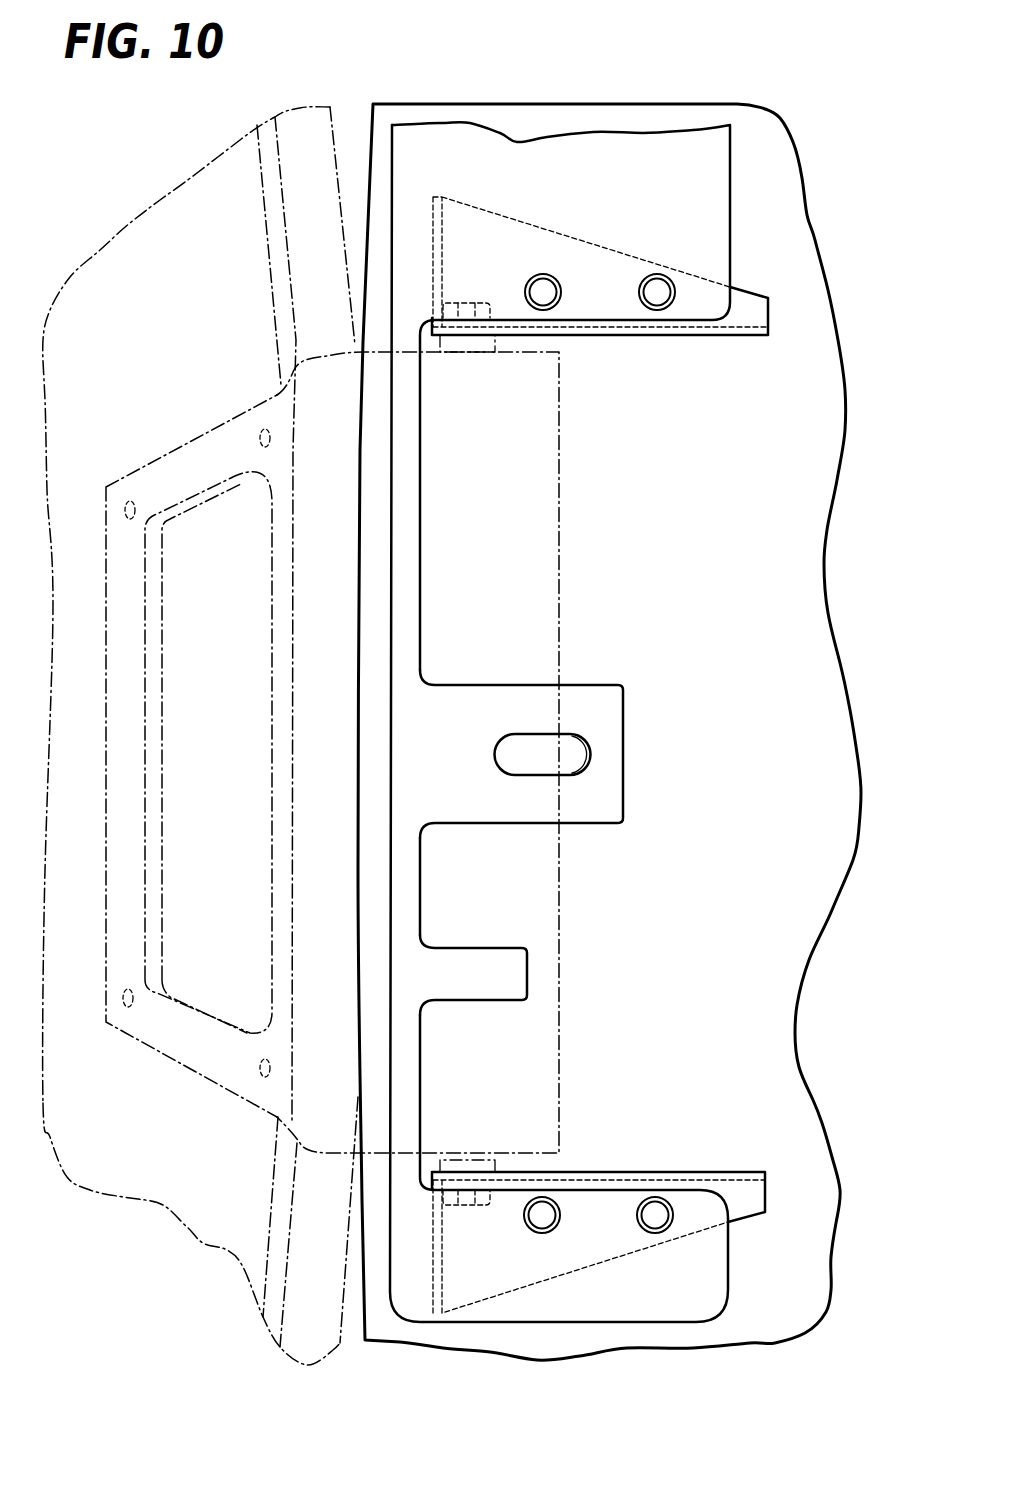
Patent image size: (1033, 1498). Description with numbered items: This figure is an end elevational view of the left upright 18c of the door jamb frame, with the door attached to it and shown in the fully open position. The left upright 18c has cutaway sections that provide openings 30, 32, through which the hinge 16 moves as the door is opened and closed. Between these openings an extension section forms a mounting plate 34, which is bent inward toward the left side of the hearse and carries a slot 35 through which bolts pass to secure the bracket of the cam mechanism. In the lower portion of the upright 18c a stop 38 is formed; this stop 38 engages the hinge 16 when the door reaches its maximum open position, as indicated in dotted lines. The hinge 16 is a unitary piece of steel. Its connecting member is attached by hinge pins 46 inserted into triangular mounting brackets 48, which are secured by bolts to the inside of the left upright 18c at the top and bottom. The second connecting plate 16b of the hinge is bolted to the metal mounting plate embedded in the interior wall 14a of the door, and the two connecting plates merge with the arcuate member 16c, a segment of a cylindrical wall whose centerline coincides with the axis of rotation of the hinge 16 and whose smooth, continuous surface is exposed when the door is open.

The interior wall 14a is at (140, 238).
The hinge 16 is at (338, 333).
The connecting plate 16b is at (223, 1213).
The arcuate member 16c is at (512, 445).
The left upright 18c is at (737, 262).
The opening 30 is at (617, 507).
The opening 32 is at (518, 879).
The mounting plate 34 is at (620, 725).
The slot 35 is at (532, 757).
The stop 38 is at (515, 980).
The hinge pins 46 is at (467, 303).
The mounting brackets 48 is at (743, 315).